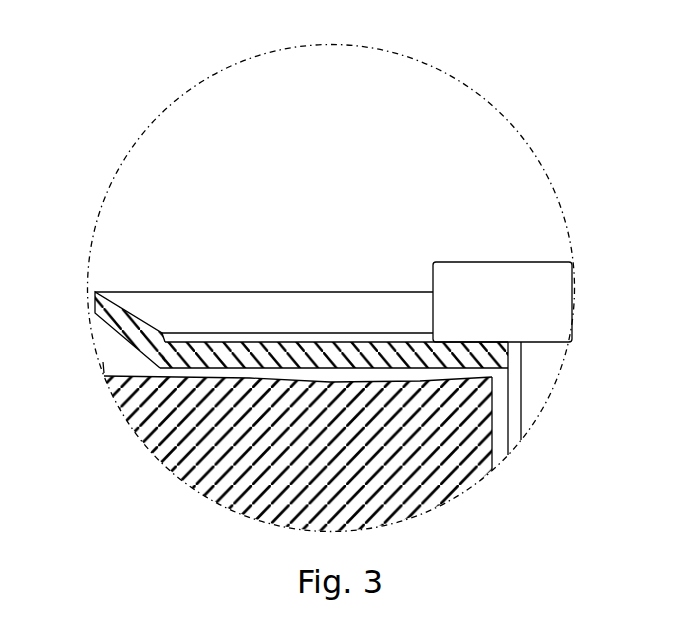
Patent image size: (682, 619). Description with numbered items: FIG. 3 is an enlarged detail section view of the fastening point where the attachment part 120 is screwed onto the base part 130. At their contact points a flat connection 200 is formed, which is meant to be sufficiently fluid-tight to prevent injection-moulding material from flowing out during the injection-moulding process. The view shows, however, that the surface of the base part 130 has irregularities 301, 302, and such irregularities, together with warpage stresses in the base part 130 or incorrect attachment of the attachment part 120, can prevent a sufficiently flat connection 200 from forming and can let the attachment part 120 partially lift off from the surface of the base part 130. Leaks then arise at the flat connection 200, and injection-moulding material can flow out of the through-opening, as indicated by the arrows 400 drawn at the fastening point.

The attachment part 120 is at (130, 290).
The base part 130 is at (133, 456).
The flat connection 200 is at (325, 374).
The irregularity 301 is at (385, 382).
The irregularity 302 is at (246, 373).
The arrows 400 is at (103, 362).